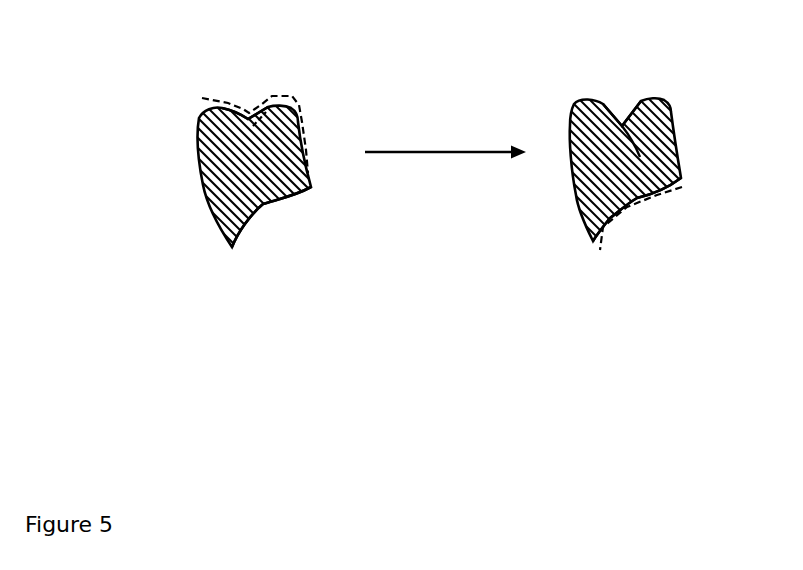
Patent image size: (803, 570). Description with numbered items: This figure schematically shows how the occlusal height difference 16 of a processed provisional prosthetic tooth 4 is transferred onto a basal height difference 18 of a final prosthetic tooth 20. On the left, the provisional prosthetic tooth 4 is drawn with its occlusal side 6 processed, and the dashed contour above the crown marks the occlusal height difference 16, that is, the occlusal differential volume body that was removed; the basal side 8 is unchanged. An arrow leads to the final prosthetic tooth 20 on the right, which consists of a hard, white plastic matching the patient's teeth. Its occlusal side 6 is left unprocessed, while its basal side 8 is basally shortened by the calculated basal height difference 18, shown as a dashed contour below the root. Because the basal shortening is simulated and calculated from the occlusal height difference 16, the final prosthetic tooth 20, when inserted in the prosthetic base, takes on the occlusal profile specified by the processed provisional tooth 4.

The provisional prosthetic teeth 4 is at (198, 127).
The occlusal sides 6 is at (248, 117).
The basal sides 8 is at (263, 208).
The occlusal height difference 16 is at (262, 98).
The basal height difference 18 is at (658, 192).
The final prosthetic teeth 20 is at (638, 157).